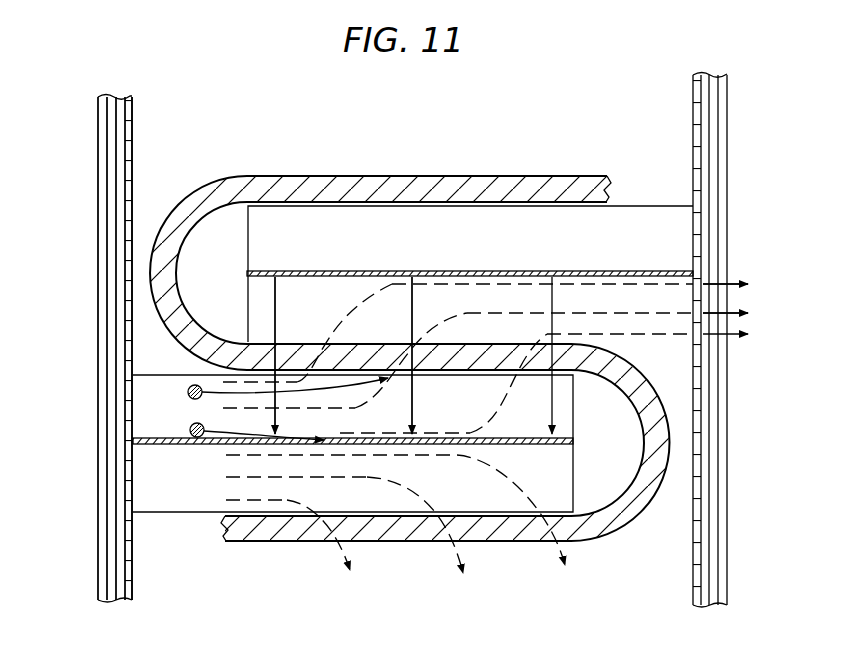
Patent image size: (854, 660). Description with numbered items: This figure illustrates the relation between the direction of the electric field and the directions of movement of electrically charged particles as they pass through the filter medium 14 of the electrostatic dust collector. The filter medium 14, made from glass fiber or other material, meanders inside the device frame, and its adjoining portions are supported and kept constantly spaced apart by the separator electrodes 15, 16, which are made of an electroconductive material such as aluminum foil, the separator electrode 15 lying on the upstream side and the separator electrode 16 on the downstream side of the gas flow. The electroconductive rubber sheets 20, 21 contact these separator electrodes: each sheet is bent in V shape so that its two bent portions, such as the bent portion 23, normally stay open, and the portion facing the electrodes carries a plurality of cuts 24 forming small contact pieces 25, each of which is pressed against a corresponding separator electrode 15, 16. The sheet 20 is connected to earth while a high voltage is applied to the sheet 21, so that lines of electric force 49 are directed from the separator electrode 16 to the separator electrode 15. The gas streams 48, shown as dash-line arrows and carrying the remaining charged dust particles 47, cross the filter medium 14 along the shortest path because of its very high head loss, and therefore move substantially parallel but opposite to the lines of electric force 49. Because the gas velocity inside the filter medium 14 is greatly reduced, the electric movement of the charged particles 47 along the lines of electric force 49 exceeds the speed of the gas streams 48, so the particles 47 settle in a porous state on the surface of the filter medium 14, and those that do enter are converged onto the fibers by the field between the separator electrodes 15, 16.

The filter medium 14 is at (402, 190).
The upstream side separator electrode 15 is at (157, 444).
The downstream side separator electrode 16 is at (645, 272).
The electroconductive rubber sheet 20 is at (97, 292).
The electroconductive rubber sheet 21 is at (731, 175).
The bent portion 23 is at (103, 121).
The cut 24 is at (134, 101).
The small contact piece 25 is at (133, 149).
The charged dust particle 47 is at (190, 430).
The gas stream 48 is at (497, 308).
The line of electric force 49 is at (277, 292).